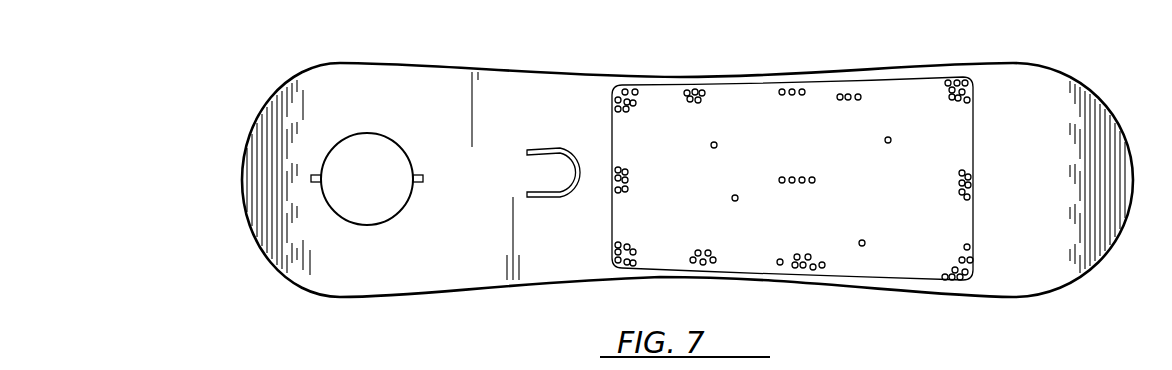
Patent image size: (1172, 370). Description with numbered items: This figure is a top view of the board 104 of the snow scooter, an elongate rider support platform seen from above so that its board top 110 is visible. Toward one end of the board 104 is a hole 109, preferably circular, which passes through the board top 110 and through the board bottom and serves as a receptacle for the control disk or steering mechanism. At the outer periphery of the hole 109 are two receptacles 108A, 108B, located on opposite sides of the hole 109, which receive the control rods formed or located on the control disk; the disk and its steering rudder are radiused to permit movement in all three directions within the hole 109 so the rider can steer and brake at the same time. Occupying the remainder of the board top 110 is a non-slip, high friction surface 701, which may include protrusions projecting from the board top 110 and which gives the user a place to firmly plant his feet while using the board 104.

The board top 110 is at (560, 92).
The board 104 is at (812, 72).
The hole 109 is at (368, 172).
The receptacle 108A is at (423, 181).
The receptacle 108B is at (311, 177).
The non-slip, high friction surface 701 is at (768, 245).